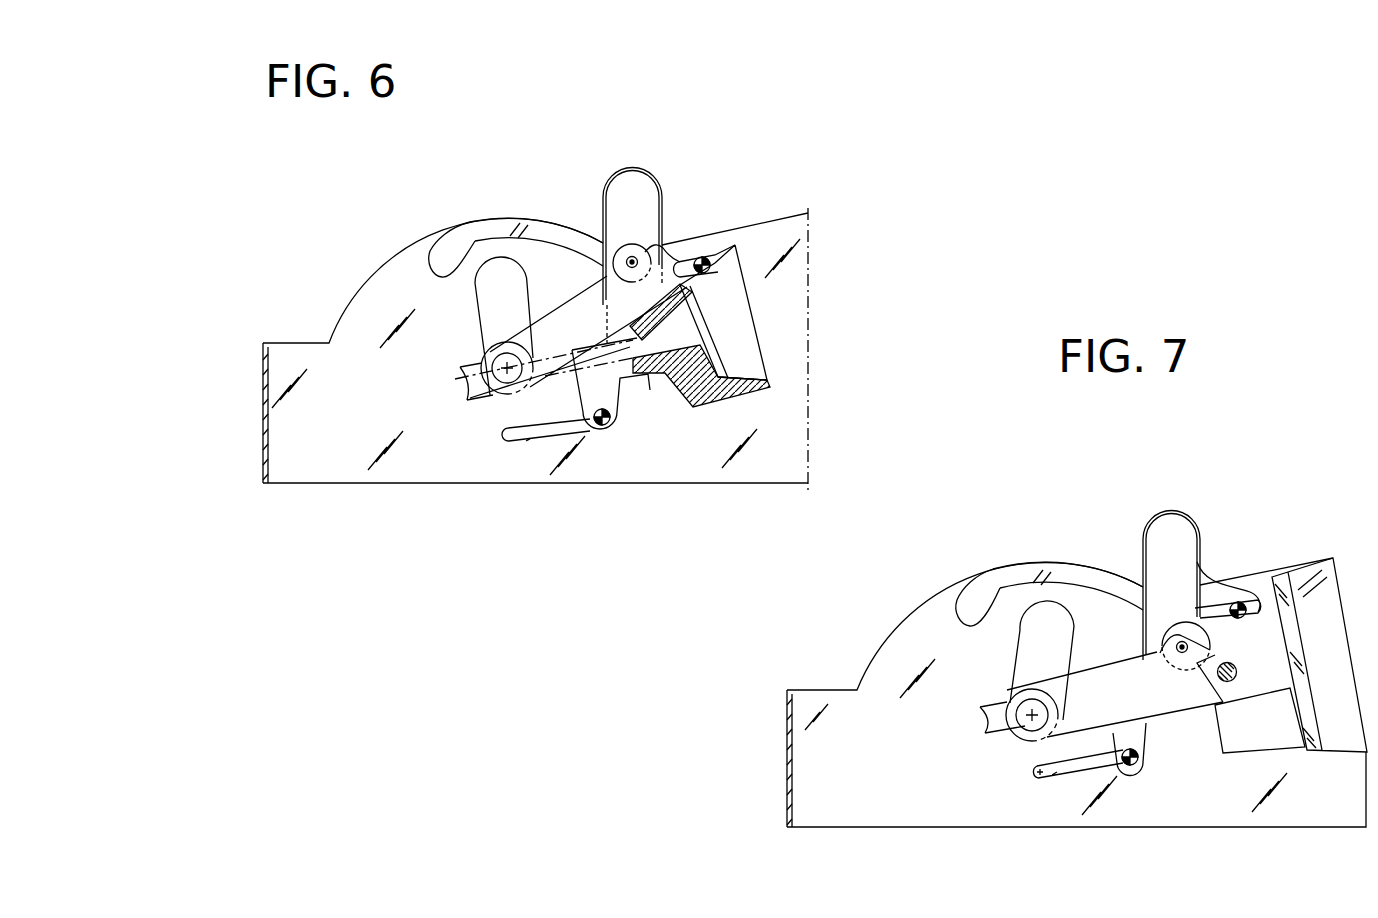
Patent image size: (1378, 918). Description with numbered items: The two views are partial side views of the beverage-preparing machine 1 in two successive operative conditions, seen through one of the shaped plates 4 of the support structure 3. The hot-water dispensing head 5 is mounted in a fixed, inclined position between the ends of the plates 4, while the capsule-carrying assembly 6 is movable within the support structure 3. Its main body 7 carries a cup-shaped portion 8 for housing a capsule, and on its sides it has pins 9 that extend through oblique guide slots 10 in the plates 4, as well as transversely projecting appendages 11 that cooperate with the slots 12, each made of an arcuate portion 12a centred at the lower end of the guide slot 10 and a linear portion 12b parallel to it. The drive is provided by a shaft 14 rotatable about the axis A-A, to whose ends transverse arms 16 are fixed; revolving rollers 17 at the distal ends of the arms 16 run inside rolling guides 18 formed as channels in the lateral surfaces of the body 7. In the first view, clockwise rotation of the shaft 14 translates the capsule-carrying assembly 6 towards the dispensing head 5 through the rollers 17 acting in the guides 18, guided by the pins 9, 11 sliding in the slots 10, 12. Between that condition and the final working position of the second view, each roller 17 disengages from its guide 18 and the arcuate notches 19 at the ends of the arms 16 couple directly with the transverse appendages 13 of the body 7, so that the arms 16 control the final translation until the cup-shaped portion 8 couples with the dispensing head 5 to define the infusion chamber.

In FIG. 6, the beverage-preparing machine 1 is at (353, 226).
In FIG. 7, the beverage-preparing machine 1 is at (862, 570).
In FIG. 6, the support structure 3 is at (243, 401).
In FIG. 7, the support structure 3 is at (753, 751).
In FIG. 6, the shaped plates 4 is at (383, 323).
In FIG. 7, the shaped plates 4 is at (862, 682).
In FIG. 7, the hot-water dispensing head 5 is at (1277, 577).
In FIG. 6, the capsule-carrying assembly 6 is at (712, 175).
In FIG. 7, the capsule-carrying assembly 6 is at (1224, 552).
In FIG. 6, the main body 7 is at (655, 395).
In FIG. 7, the main body 7 is at (1128, 638).
In FIG. 6, the cup-shaped portion 8 is at (725, 398).
In FIG. 7, the cup-shaped portion 8 is at (1283, 730).
In FIG. 6, the pins 9 is at (602, 426).
In FIG. 7, the pins 9 is at (1140, 766).
In FIG. 6, the guide slots 10 is at (527, 440).
In FIG. 7, the guide slots 10 is at (1046, 778).
In FIG. 6, the transversely projecting appendages 11 is at (712, 250).
In FIG. 7, the transversely projecting appendages 11 is at (1247, 598).
In FIG. 6, the slots 12 is at (554, 235).
In FIG. 7, the slots 12 is at (1083, 555).
In FIG. 6, the arcuate slot portion 12a is at (466, 252).
In FIG. 7, the arcuate slot portion 12a is at (985, 595).
In FIG. 6, the linear slot portion 12b is at (668, 286).
In FIG. 7, the linear slot portion 12b is at (1170, 618).
In FIG. 7, the transverse appendages 13 is at (1237, 674).
In FIG. 6, the shaft 14 is at (493, 316).
In FIG. 7, the shaft 14 is at (1022, 660).
In FIG. 6, the transverse arms 16 is at (568, 332).
In FIG. 7, the transverse arms 16 is at (1106, 700).
In FIG. 6, the revolving rollers 17 is at (632, 255).
In FIG. 7, the revolving rollers 17 is at (1204, 652).
In FIG. 6, the rolling guides 18 is at (626, 200).
In FIG. 7, the rolling guides 18 is at (1145, 548).
In FIG. 6, the arcuate notches 19 is at (696, 257).
In FIG. 7, the arcuate notches 19 is at (1215, 705).